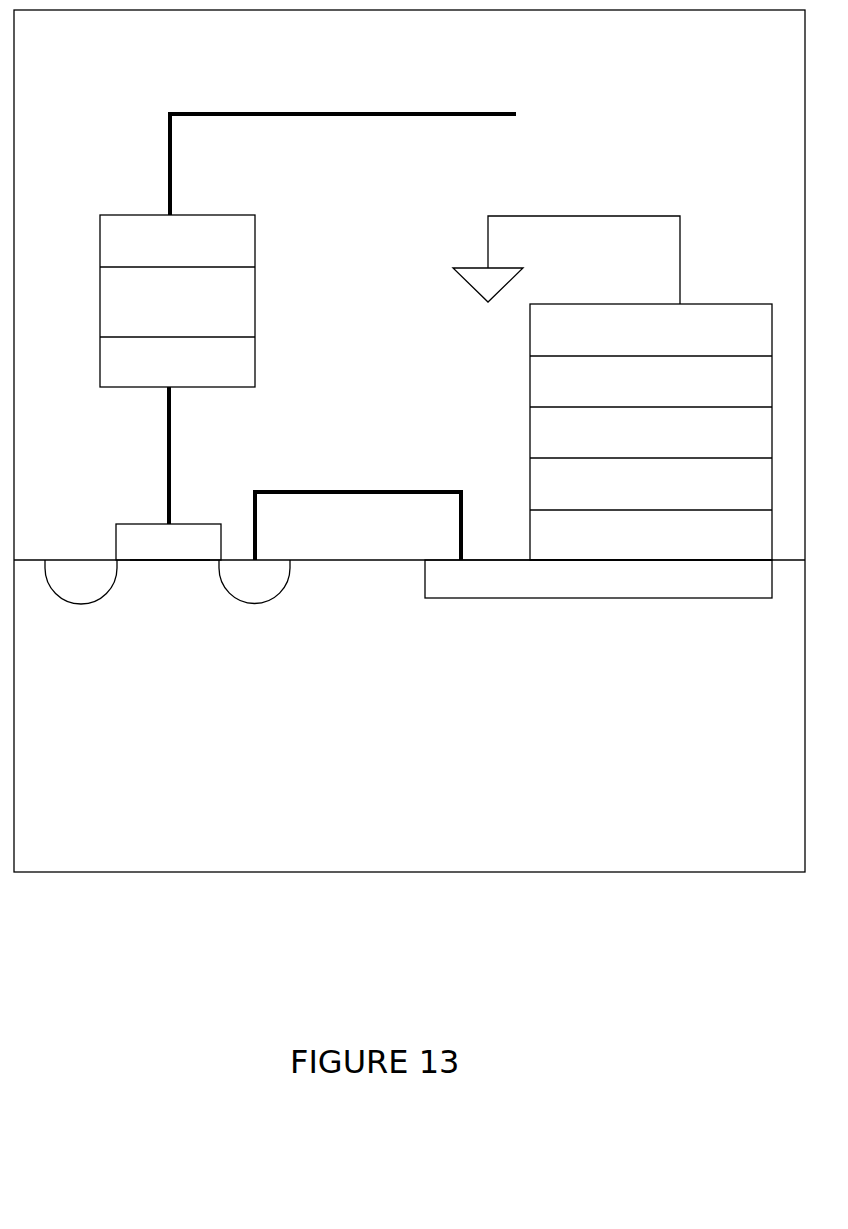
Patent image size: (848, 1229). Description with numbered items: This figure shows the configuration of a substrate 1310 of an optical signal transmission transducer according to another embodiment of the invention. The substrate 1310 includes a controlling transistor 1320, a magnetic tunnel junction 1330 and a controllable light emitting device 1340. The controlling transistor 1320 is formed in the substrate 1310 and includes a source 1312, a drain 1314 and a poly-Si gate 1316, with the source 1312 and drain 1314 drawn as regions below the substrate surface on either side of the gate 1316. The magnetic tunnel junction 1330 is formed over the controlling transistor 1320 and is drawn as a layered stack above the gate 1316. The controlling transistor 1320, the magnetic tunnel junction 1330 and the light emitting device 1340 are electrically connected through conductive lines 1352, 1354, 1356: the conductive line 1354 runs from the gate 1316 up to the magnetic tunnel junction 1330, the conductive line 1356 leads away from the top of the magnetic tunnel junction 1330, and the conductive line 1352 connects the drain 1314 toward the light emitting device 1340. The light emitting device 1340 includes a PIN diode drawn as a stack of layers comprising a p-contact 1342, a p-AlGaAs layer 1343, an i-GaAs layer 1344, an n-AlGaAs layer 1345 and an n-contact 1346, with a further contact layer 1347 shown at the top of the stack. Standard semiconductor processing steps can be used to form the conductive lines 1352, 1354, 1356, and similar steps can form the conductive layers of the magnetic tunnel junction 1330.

The substrate 1310 is at (409, 441).
The source 1312 is at (82, 593).
The drain 1314 is at (272, 577).
The poly-Si gate 1316 is at (134, 543).
The controlling transistor 1320 is at (163, 598).
The magnetic tunnel junction 1330 is at (238, 300).
The controllable light emitting device 1340 is at (575, 407).
The p-contact 1342 is at (598, 579).
The p-AlGaAs layer 1343 is at (651, 541).
The i-GaAs layer 1344 is at (651, 491).
The n-AlGaAs layer 1345 is at (651, 439).
The n-contact 1346 is at (651, 388).
The n-contact layer 1347 is at (651, 337).
The conductive line 1352 is at (345, 490).
The conductive line 1354 is at (170, 467).
The conductive line 1356 is at (325, 112).